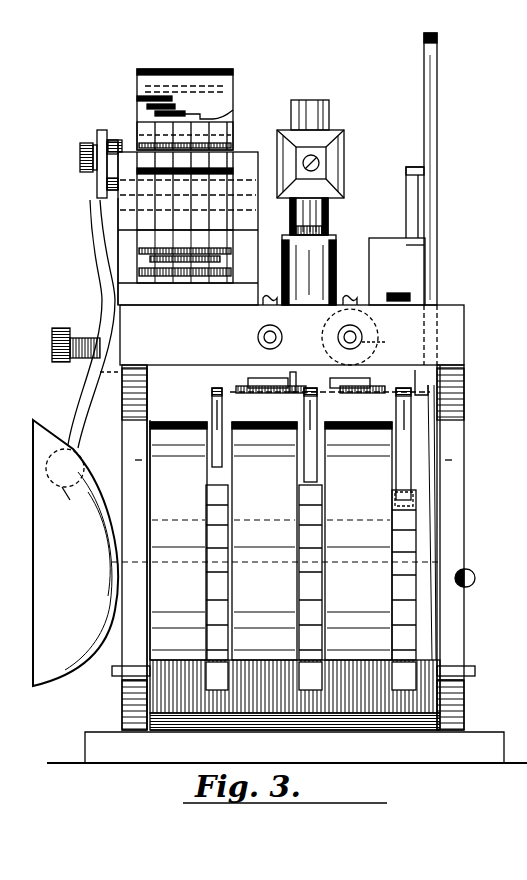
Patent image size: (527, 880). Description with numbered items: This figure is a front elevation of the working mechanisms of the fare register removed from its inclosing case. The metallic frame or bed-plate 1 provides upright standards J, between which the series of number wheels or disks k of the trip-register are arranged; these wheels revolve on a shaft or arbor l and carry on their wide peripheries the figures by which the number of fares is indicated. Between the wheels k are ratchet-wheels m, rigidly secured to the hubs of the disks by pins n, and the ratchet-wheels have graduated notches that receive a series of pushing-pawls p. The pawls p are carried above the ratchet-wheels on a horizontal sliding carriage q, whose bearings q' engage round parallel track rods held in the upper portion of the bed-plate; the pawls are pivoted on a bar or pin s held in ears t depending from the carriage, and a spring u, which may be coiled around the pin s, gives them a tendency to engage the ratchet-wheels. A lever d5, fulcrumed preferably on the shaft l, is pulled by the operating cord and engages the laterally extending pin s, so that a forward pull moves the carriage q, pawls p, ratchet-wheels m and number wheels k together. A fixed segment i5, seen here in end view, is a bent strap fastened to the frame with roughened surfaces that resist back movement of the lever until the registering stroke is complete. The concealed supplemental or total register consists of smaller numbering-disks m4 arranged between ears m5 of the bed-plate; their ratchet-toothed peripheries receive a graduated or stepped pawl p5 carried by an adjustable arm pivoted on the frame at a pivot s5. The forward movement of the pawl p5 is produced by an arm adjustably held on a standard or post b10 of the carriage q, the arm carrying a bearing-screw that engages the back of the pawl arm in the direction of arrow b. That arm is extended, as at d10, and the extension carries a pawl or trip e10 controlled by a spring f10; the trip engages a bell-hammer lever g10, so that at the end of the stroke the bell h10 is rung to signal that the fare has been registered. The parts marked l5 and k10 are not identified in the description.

The frame or bed-plate 1 is at (287, 747).
The standards J is at (293, 547).
The number wheels or disks k is at (176, 421).
The pins n is at (311, 444).
The pushing-pawls p is at (310, 435).
The ratchet-wheels m is at (311, 572).
The pivot s5 is at (299, 681).
The arrow b is at (310, 323).
The sliding carriage q is at (358, 337).
The bearings q' is at (380, 345).
The ears t is at (330, 382).
The spring u is at (312, 378).
The bar or pin s is at (423, 513).
The shaft or arbor l is at (469, 578).
The lever d5 is at (440, 77).
The bracket l5 is at (412, 205).
The fixed segment i5 is at (397, 271).
The standard or post b10 is at (330, 112).
The graduated or stepped pawl p5 is at (179, 69).
The extension d10 is at (117, 138).
The spring f10 is at (96, 180).
The pawl or trip e10 is at (80, 157).
The ears m5 is at (246, 236).
The numbering-disks m4 is at (185, 250).
The bell-hammer lever g10 is at (88, 390).
The adjusting screw k10 is at (82, 338).
The bell h10 is at (75, 553).